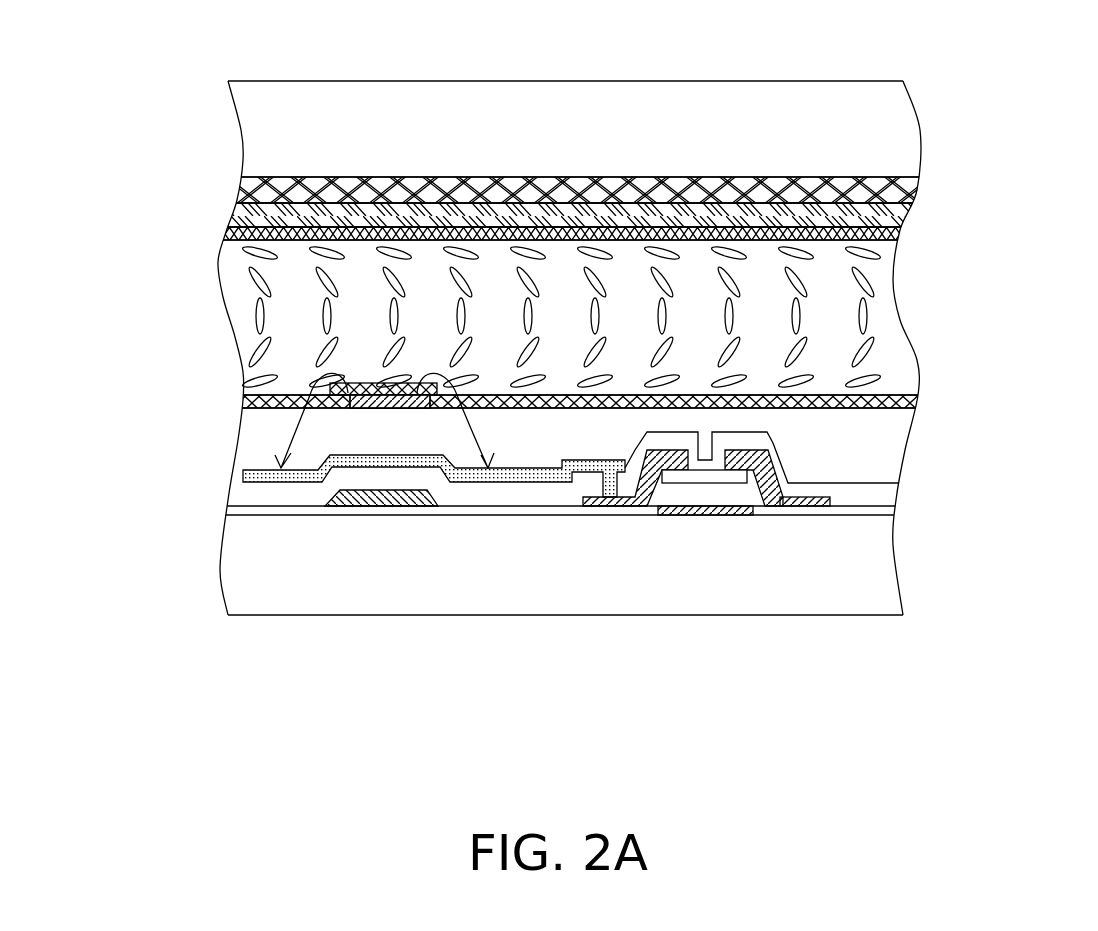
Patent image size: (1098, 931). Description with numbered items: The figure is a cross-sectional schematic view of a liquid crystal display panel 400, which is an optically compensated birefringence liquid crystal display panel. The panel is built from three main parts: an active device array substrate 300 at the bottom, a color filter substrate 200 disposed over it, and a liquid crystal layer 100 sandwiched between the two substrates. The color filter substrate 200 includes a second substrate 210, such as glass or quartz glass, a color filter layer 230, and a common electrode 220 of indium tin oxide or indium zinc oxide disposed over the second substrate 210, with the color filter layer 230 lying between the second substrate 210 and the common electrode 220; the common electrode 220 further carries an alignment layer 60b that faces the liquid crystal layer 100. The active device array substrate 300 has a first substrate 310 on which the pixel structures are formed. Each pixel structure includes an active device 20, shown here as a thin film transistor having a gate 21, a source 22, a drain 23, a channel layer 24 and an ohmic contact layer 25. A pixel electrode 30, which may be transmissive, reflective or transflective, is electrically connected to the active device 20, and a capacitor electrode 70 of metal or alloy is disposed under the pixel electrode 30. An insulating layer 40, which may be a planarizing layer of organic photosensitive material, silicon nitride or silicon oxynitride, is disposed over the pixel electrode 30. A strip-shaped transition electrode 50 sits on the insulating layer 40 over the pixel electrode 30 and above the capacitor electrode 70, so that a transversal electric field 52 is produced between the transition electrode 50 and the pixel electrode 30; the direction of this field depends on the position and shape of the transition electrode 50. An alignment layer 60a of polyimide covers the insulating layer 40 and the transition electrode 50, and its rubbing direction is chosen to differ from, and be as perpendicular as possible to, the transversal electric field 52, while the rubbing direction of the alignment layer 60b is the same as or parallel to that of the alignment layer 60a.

The liquid crystal display panel 400 is at (643, 386).
The color filter substrate 200 is at (643, 179).
The second substrate 210 is at (900, 132).
The color filter layer 230 is at (900, 188).
The common electrode 220 is at (890, 210).
The alignment layer 60b is at (608, 252).
The liquid crystal layer 100 is at (893, 382).
The active device array substrate 300 is at (598, 386).
The first substrate 310 is at (243, 592).
The alignment layer 60a is at (318, 400).
The capacitor electrode 70 is at (350, 500).
The pixel electrode 30 is at (390, 437).
The insulating layer 40 is at (410, 403).
The transition electrode 50 is at (439, 355).
The transversal electric field 52 is at (427, 387).
The active device 20 is at (723, 598).
The gate 21 is at (705, 513).
The source 22 is at (808, 502).
The drain 23 is at (623, 503).
The channel layer 24 is at (683, 478).
The ohmic contact layer 25 is at (737, 467).